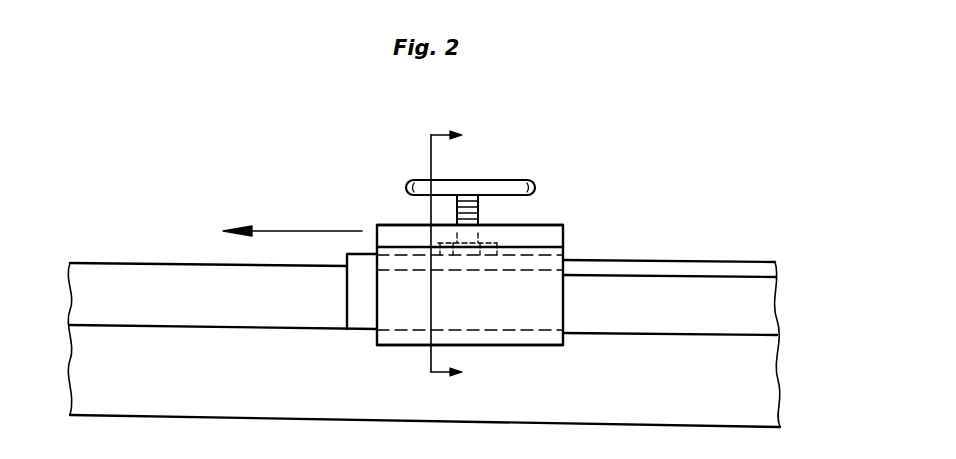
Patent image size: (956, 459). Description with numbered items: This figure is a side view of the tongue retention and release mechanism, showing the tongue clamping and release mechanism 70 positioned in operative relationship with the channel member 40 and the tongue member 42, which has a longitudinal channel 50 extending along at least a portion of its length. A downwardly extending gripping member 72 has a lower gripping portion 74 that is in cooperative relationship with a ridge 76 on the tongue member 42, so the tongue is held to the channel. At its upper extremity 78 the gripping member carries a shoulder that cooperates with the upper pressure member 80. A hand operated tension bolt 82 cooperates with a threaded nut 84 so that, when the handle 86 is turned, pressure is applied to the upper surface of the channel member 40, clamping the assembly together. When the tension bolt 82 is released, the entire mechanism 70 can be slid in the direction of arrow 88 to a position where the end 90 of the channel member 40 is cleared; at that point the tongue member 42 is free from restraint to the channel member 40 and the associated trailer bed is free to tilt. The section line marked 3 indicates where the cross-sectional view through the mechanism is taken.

The section line 3- 3 is at (453, 255).
The channel member 40 is at (673, 260).
The tongue member 42 is at (138, 263).
The channel 50 is at (90, 351).
The tongue clamping and release mechanism 70 is at (491, 267).
The gripping member 72 is at (547, 316).
The lower gripping portion 74 is at (405, 345).
The ridge 76 is at (207, 329).
The upper extremity 78 is at (565, 246).
The upper pressure member 80 is at (402, 237).
The tension bolt 82 is at (479, 216).
The threaded nut 84 is at (465, 273).
The handle 86 is at (463, 180).
The arrow 88 is at (297, 230).
The end of channel member 90 is at (345, 285).